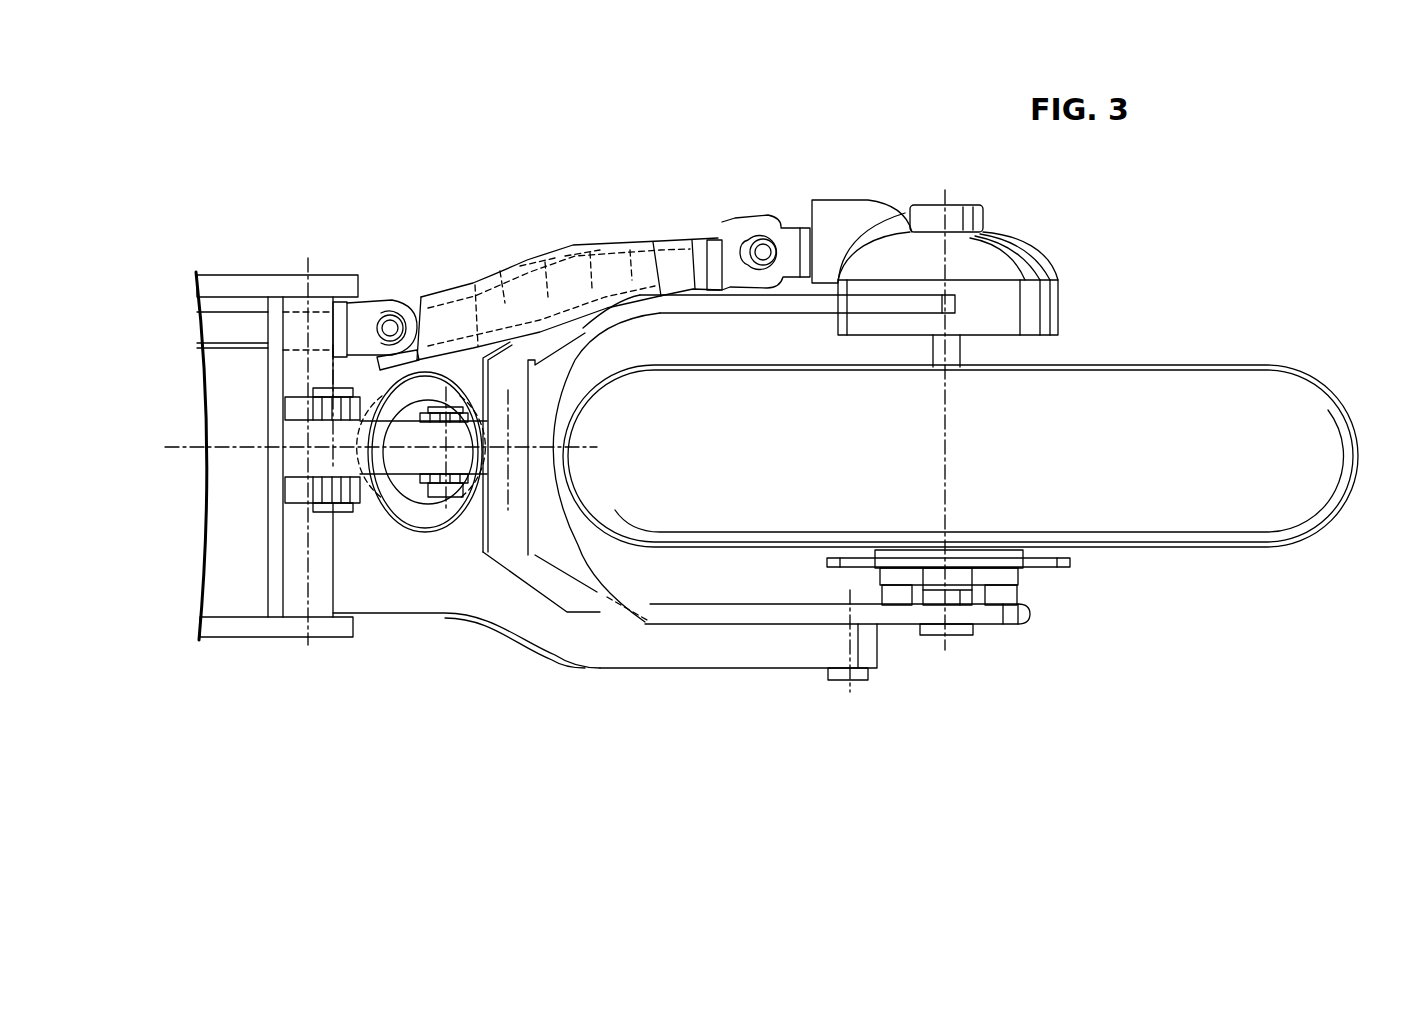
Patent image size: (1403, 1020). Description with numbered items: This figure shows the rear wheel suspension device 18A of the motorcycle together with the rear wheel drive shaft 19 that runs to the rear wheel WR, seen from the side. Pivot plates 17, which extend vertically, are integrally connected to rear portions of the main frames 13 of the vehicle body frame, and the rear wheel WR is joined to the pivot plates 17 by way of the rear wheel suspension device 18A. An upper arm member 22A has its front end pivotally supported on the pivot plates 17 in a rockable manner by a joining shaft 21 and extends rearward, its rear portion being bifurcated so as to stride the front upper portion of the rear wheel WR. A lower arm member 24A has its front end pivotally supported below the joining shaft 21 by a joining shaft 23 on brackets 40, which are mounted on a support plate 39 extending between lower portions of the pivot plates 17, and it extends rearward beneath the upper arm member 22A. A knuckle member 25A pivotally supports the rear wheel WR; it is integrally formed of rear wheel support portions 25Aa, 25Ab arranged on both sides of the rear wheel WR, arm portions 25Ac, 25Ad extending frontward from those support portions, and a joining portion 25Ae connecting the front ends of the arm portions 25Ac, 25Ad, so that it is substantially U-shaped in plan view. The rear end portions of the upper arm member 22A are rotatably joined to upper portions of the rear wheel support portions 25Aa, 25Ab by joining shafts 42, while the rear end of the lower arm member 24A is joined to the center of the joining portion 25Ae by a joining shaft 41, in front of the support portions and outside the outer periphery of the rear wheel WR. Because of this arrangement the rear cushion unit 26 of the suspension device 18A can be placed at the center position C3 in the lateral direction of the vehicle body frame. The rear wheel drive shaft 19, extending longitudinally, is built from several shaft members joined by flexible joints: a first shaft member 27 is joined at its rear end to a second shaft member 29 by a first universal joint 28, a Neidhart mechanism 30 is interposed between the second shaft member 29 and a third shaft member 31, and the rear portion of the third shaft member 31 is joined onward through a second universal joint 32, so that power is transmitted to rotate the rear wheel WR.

The main frames 13 is at (213, 277).
The pivot plates 17 is at (330, 274).
The rear wheel suspension device 18A is at (570, 672).
The rear wheel drive shaft 19 is at (236, 302).
The joining shaft 21 is at (300, 605).
The upper arm member 22A is at (497, 608).
The joining shaft 23 is at (320, 512).
The lower arm member 24A is at (392, 463).
The knuckle member 25A is at (908, 632).
The rear wheel support portion 25Aa is at (1000, 320).
The rear wheel support portion 25Ab is at (1037, 617).
The arm portion 25Ac is at (697, 240).
The arm portion 25Ad is at (710, 612).
The joining portion 25Ae is at (585, 476).
The rear cushion unit 26 is at (427, 523).
The first shaft member 27 is at (237, 352).
The first universal joint 28 is at (389, 297).
The second shaft member 29 is at (447, 283).
The Neidhart mechanism 30 is at (562, 267).
The third shaft member 31 is at (677, 265).
The second universal joint 32 is at (752, 297).
The support plate 39 is at (268, 488).
The brackets 40 is at (292, 296).
The joining shaft 41 is at (537, 437).
The joining shafts 42 is at (838, 673).
The center position C3 is at (232, 452).
The rear wheel WR is at (1198, 390).